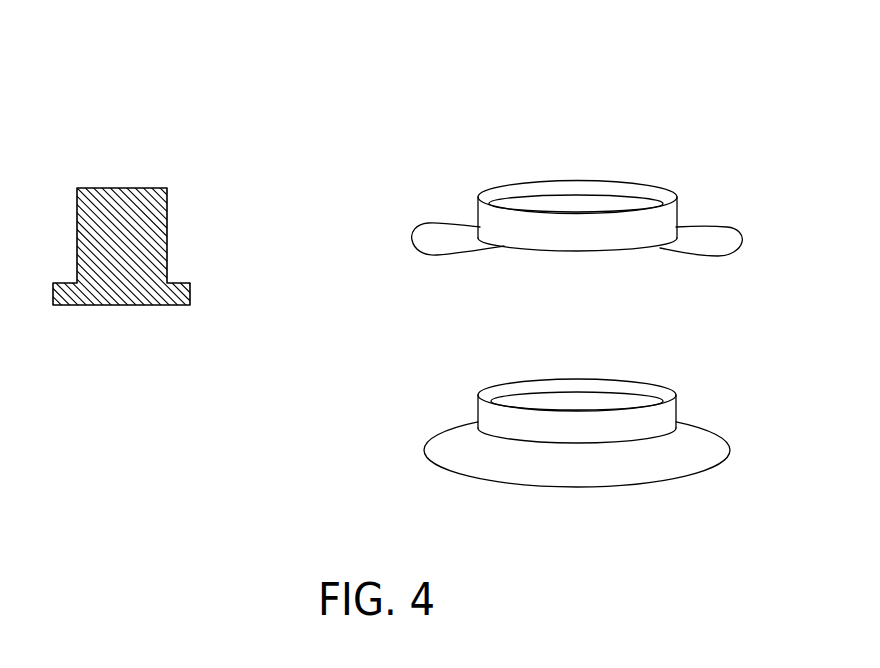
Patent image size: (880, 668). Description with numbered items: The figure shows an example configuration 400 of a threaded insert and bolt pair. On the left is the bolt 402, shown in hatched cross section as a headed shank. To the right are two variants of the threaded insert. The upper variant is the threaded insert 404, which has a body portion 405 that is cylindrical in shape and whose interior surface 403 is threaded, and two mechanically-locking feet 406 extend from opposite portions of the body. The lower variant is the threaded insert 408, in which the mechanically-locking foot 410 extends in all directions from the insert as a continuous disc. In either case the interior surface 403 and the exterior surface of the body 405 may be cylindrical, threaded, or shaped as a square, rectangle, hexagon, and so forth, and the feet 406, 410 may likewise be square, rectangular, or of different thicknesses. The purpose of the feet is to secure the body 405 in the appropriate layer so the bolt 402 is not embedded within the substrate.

The example configuration 400 is at (610, 58).
The bolt 402 is at (167, 232).
The interior surface 403 is at (593, 195).
The threaded insert 404 is at (583, 252).
The body portion 405 is at (478, 213).
The mechanically-locking feet 406 is at (693, 233).
The threaded insert 408 is at (617, 380).
The mechanically-locking foot 410 is at (582, 473).